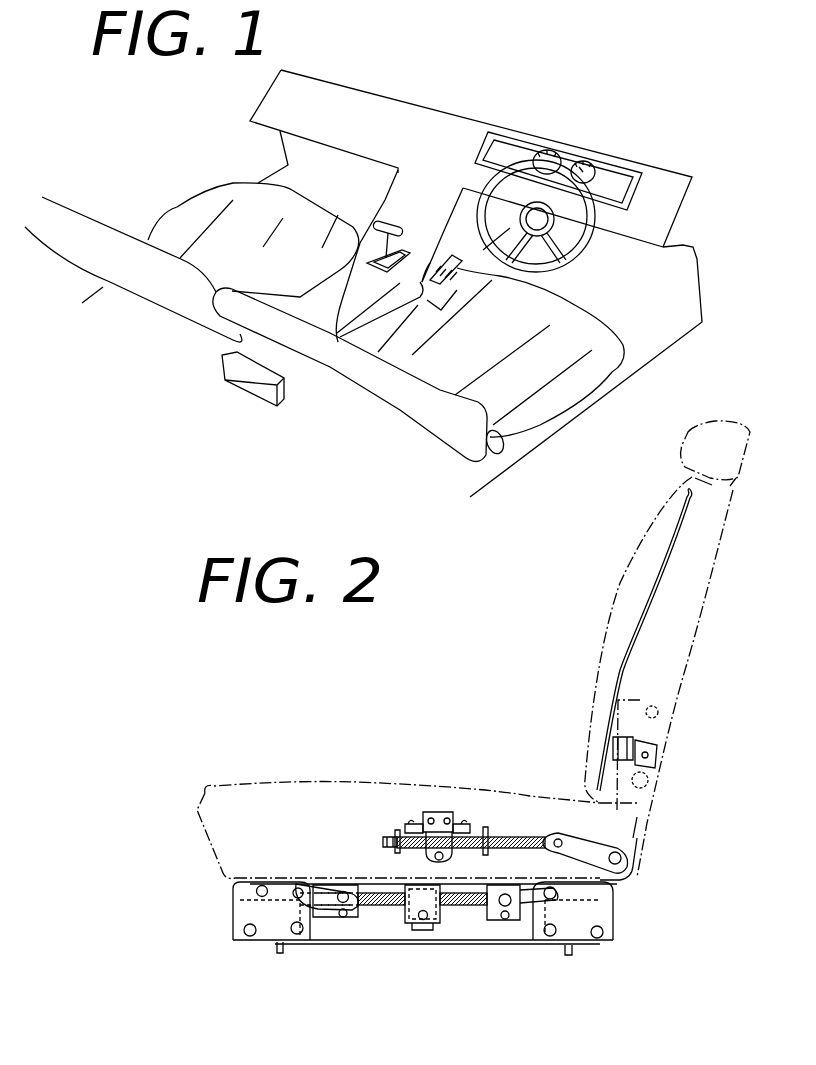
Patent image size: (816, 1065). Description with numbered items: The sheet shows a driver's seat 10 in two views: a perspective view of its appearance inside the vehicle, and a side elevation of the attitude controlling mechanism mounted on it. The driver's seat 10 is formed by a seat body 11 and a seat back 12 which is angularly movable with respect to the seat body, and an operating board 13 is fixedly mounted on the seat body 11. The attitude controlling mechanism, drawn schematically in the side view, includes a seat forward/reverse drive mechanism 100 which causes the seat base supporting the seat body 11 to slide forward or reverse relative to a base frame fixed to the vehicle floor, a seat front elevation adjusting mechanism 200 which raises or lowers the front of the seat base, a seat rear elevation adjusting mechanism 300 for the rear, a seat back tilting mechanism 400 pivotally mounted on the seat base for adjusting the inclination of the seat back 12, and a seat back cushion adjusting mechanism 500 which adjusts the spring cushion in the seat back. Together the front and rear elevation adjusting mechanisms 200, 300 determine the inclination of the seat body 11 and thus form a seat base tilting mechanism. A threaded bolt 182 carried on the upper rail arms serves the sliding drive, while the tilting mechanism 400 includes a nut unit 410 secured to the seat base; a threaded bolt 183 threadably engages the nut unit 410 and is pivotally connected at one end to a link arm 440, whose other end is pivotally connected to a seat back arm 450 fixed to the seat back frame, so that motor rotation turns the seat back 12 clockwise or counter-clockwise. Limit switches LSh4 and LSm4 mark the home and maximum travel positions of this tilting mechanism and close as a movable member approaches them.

In FIG. 1, the driver's seat 10 is at (418, 356).
In FIG. 2, the driver's seat 10 is at (493, 690).
In FIG. 1, the seat body 11 is at (558, 400).
In FIG. 2, the seat body 11 is at (372, 783).
In FIG. 1, the seat back 12 is at (458, 440).
In FIG. 2, the seat back 12 is at (607, 623).
In FIG. 1, the operating board 13 is at (437, 258).
In FIG. 2, the seat forward/reverse drive mechanism 100 is at (412, 929).
In FIG. 2, the seat front elevation adjusting mechanism 200 is at (327, 922).
In FIG. 2, the seat rear elevation adjusting mechanism 300 is at (521, 924).
In FIG. 2, the seat back tilting mechanism 400 is at (505, 801).
In FIG. 2, the nut unit 410 is at (443, 812).
In FIG. 2, the link arm 440 is at (576, 840).
In FIG. 2, the seat back arm 450 is at (643, 808).
In FIG. 2, the seat back cushion adjusting mechanism 500 is at (645, 732).
In FIG. 2, the threaded bolt 182 is at (383, 903).
In FIG. 2, the threaded bolt 183 is at (493, 847).
In FIG. 2, the limit switch LSh4 is at (415, 812).
In FIG. 2, the limit switch LSm4 is at (467, 827).